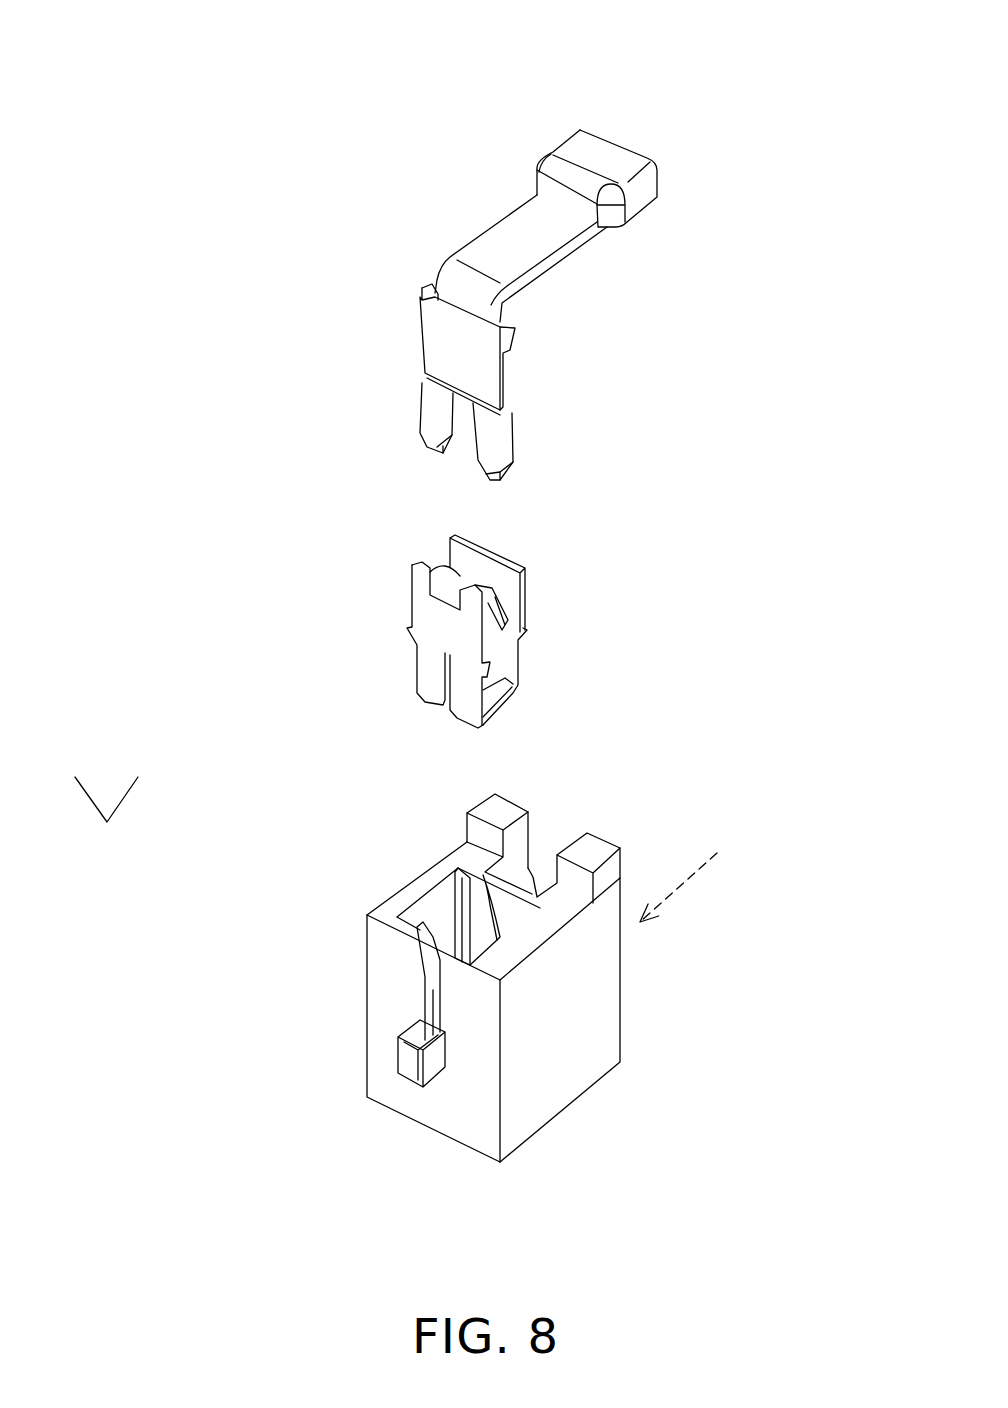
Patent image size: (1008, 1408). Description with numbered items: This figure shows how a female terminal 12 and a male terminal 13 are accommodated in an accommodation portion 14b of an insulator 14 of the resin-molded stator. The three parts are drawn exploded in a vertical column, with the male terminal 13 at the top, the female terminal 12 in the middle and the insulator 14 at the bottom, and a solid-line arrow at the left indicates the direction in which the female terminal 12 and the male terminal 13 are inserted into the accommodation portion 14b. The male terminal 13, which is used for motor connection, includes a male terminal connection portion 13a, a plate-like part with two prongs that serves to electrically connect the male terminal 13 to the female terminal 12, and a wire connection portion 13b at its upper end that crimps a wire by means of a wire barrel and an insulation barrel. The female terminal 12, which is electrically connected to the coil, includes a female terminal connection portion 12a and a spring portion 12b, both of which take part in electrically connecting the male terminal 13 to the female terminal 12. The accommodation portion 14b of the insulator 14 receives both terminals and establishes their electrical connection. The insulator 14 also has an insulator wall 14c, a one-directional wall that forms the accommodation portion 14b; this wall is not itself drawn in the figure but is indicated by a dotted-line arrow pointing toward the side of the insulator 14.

The female terminal 12 is at (372, 543).
The female terminal connection portion 12a is at (510, 603).
The spring portion 12b is at (497, 607).
The male terminal 13 is at (457, 185).
The male terminal connection portion 13a is at (513, 357).
The wire connection portion 13b is at (640, 130).
The insulator 14 is at (325, 1035).
The accommodation portion 14b is at (465, 922).
The insulator wall 14c is at (621, 1012).